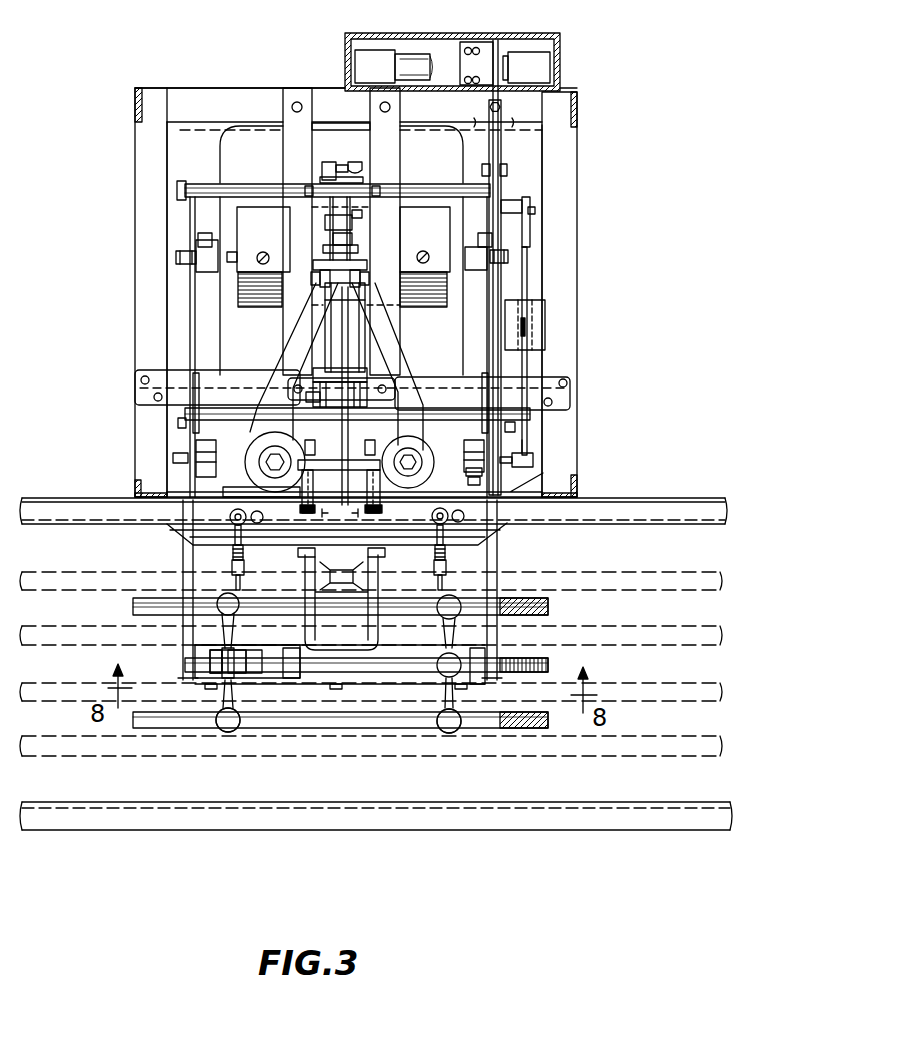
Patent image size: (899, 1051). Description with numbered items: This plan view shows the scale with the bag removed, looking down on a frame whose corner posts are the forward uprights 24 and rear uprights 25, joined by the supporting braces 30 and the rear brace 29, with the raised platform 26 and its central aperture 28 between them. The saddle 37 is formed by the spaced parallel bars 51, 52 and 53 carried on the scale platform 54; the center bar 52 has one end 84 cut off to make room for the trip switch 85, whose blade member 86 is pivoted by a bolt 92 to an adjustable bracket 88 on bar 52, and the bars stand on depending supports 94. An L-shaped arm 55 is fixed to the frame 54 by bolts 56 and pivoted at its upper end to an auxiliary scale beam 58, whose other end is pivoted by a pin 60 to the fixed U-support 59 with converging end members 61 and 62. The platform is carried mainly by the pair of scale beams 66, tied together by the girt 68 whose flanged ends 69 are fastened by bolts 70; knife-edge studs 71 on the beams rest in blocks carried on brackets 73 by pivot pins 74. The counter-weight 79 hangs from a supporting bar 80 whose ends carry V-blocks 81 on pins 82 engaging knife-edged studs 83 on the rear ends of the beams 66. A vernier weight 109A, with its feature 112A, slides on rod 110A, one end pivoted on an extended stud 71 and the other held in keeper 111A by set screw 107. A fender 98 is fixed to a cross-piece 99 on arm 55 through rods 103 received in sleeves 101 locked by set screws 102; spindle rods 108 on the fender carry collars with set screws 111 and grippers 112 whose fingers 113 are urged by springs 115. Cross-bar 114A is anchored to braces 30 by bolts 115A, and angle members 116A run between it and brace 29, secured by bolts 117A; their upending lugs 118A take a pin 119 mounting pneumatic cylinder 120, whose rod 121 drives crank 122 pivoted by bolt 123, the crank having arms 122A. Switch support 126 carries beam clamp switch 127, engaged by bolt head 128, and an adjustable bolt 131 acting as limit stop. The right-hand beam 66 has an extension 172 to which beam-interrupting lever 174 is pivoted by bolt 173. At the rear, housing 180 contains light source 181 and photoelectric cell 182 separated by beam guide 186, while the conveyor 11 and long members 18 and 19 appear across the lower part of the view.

The rails 11 is at (720, 623).
The lower beam 18 is at (706, 820).
The upper beam 19 is at (704, 512).
The forward uprights 24 is at (135, 476).
The rear uprights 25 is at (135, 97).
The raised platform 26 is at (195, 133).
The aperture 28 is at (222, 138).
The supporting brace 29 is at (223, 90).
The supporting brace 30 is at (170, 201).
The saddle 37 is at (464, 637).
The saddle bar 51 is at (143, 722).
The center saddle bar 52 is at (363, 663).
The saddle bar 53 is at (133, 604).
The scale platform 54 is at (410, 677).
The L-shaped arm 55 is at (355, 422).
The bolts 56 is at (312, 553).
The auxiliary scale beam 58 is at (343, 338).
The U-support 59 is at (400, 364).
The pin 60 is at (367, 276).
The open end member 61 is at (408, 456).
The open end member 62 is at (275, 458).
The scale beams 66 is at (190, 303).
The girt 68 is at (445, 417).
The flanged ends 69 is at (199, 418).
The bolts 70 is at (178, 423).
The studs 71 is at (194, 472).
The brackets 73 is at (466, 471).
The pivot pins 74 is at (470, 483).
The counter-weight 79 is at (343, 257).
The supporting bar 80 is at (247, 245).
The V-blocks 81 is at (195, 250).
The pins 82 is at (205, 235).
The knife-edged studs 83 is at (177, 253).
The cut-off end 84 is at (257, 662).
The trip switch 85 is at (222, 665).
The blade member 86 is at (237, 657).
The adjustable bracket 88 is at (292, 678).
The bolt 92 is at (237, 668).
The depending supports 94 is at (230, 732).
The fender 98 is at (300, 535).
The cross-piece 99 is at (310, 460).
The sleeves 101 is at (300, 495).
The set screw 102 is at (340, 514).
The supporting rods 103 is at (310, 450).
The set screw 107 is at (531, 210).
The spindle rod 108 is at (230, 517).
The vernier weight 109A is at (543, 303).
The rod 110A is at (528, 276).
The set screw 111 is at (263, 518).
The keeper 111A is at (512, 204).
The gripper 112 is at (232, 560).
The slot 112A is at (526, 323).
The finger 113 is at (236, 578).
The cross-bar 114A is at (157, 372).
The spring 115 is at (236, 549).
The bolts 115A is at (157, 397).
The angle members 116A is at (295, 137).
The bolts 117A is at (300, 103).
The upending lug 118A is at (317, 387).
The pin 119 is at (306, 397).
The pneumatic cylinder 120 is at (352, 332).
The piston rod 121 is at (347, 240).
The crank 122 is at (362, 212).
The crank arms 122A is at (327, 210).
The pivot bolt 123 is at (380, 192).
The switch support 126 is at (353, 138).
The beam clamp switch 127 is at (350, 166).
The bolt head 128 is at (363, 172).
The adjustable bolt 131 is at (322, 170).
The extending portion 172 is at (501, 144).
The bolt 173 is at (505, 169).
The beam-interrupting lever 174 is at (500, 44).
The housing 180 is at (345, 47).
The light source 181 is at (368, 58).
The photoelectric cell 182 is at (540, 60).
The beam guide 186 is at (492, 40).